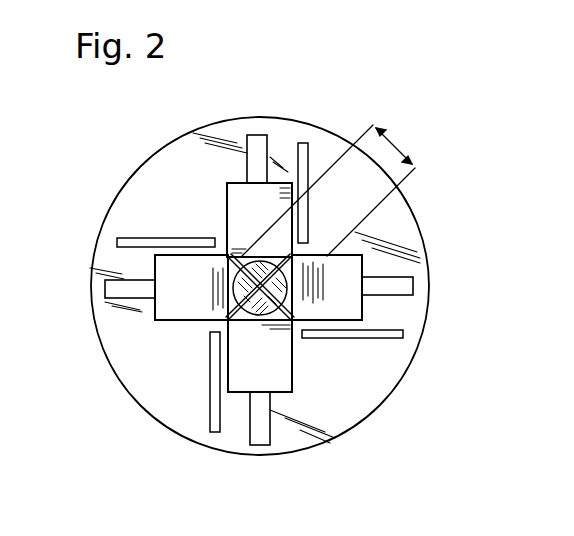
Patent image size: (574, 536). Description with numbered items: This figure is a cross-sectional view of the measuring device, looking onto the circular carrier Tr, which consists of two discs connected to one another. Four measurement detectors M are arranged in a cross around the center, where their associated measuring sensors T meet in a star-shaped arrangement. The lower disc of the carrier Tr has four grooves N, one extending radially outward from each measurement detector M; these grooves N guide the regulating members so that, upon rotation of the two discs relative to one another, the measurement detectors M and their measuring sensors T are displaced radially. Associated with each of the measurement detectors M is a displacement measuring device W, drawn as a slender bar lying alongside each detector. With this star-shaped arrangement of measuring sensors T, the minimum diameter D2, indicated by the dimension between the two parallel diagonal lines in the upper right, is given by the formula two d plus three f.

The carrier Tr is at (426, 233).
The minimum diameter D2 is at (328, 189).
The measurement detector M is at (228, 193).
The measuring sensor T is at (278, 263).
The groove N is at (250, 137).
The displacement measuring device W is at (118, 240).